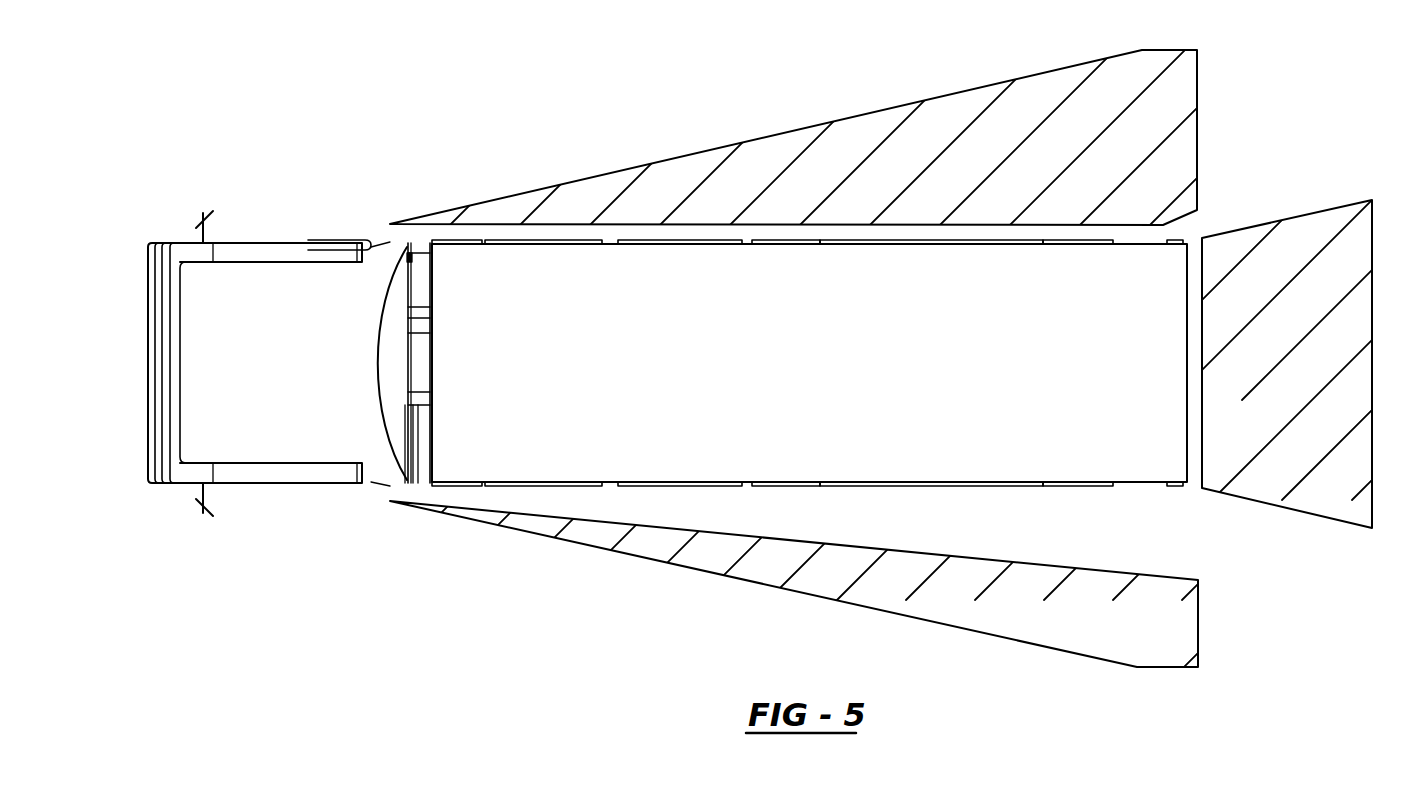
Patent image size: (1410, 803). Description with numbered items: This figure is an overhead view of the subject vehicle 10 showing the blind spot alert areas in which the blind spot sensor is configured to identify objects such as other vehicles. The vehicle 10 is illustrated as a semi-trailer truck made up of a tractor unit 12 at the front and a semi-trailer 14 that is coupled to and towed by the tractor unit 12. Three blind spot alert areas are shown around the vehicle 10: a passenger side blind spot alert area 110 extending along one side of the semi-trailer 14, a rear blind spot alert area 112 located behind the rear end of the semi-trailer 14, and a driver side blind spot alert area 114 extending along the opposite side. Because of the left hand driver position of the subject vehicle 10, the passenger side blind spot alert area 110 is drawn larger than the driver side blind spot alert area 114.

The vehicle 10 is at (667, 346).
The tractor unit 12 is at (296, 485).
The semi-trailer 14 is at (1093, 483).
The passenger side blind spot alert area 110 is at (945, 93).
The rear blind spot alert area 112 is at (1308, 212).
The driver side blind spot alert area 114 is at (990, 637).